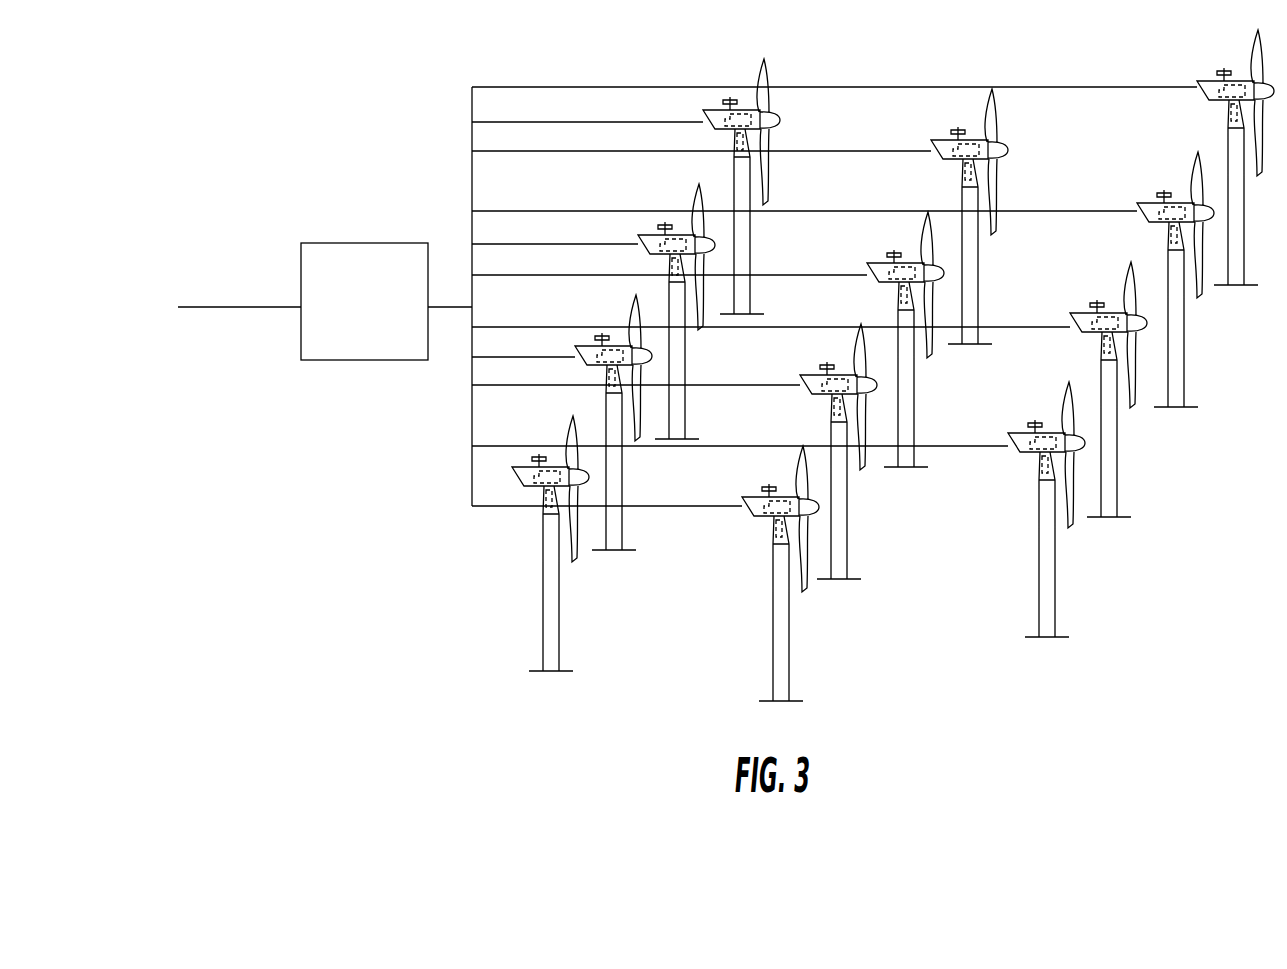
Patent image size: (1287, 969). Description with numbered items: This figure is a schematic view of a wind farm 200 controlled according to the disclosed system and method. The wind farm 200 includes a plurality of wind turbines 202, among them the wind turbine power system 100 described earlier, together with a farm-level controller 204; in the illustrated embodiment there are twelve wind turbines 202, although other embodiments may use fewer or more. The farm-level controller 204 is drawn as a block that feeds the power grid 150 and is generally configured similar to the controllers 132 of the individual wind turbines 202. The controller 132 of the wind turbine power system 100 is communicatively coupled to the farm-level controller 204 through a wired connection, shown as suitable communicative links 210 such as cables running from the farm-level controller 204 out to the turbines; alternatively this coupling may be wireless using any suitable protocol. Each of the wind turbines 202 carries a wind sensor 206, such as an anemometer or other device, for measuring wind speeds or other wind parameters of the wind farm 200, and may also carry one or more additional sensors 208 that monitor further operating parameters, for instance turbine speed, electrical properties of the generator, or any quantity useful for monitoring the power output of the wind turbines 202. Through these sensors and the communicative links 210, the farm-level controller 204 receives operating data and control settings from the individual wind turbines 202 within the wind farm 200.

The wind turbine power system 100 is at (536, 530).
The controller 132 is at (492, 435).
The power grid 150 is at (145, 368).
The wind farm 200 is at (368, 147).
The wind turbines 202 is at (924, 365).
The farm-level controller 204 is at (385, 308).
The wind sensor 206 is at (719, 520).
The sensors 208 is at (744, 553).
The communicative links 210 is at (590, 151).